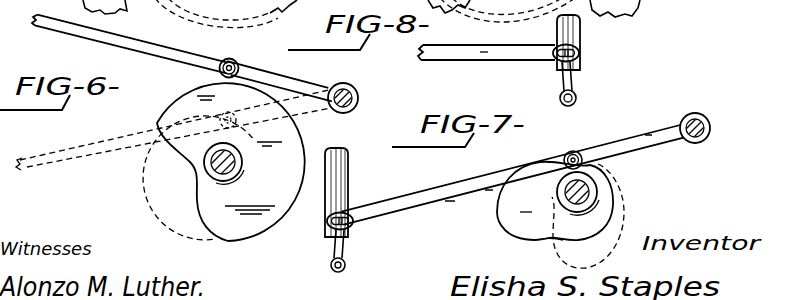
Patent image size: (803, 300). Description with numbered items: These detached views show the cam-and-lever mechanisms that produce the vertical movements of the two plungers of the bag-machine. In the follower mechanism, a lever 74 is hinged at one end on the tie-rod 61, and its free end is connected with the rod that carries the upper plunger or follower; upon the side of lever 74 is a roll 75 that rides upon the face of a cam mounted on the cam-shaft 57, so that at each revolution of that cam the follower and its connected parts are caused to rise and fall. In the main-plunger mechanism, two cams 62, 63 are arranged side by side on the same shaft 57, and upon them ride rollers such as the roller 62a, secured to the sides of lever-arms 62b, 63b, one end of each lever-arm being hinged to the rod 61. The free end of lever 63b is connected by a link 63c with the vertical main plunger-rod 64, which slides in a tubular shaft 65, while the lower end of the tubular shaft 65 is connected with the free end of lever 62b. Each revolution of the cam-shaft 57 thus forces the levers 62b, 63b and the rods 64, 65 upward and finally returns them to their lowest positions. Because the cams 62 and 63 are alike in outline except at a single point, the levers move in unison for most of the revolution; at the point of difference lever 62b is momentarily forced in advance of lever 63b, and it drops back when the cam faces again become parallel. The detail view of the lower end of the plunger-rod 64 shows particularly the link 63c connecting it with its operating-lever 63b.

In FIG. 6, the cam-shaft 57 is at (207, 167).
In FIG. 7, the cam-shaft 57 is at (597, 190).
In FIG. 6, the tie-rod 61 is at (359, 97).
In FIG. 7, the tie-rod 61 is at (699, 122).
In FIG. 7, the cam 62 is at (560, 215).
In FIG. 7, the roller 62a is at (582, 141).
In FIG. 7, the lever-arm 62b is at (427, 197).
In FIG. 7, the cam 63 is at (534, 238).
In FIG. 8, the lever-arm 63b is at (497, 50).
In FIG. 8, the link 63c is at (568, 73).
In FIG. 8, the main plunger-rod 64 is at (572, 81).
In FIG. 7, the main plunger-rod 64 is at (334, 247).
In FIG. 8, the tubular shaft 65 is at (580, 34).
In FIG. 7, the tubular shaft 65 is at (334, 186).
In FIG. 6, the lever 74 is at (172, 51).
In FIG. 6, the roll 75 is at (234, 63).